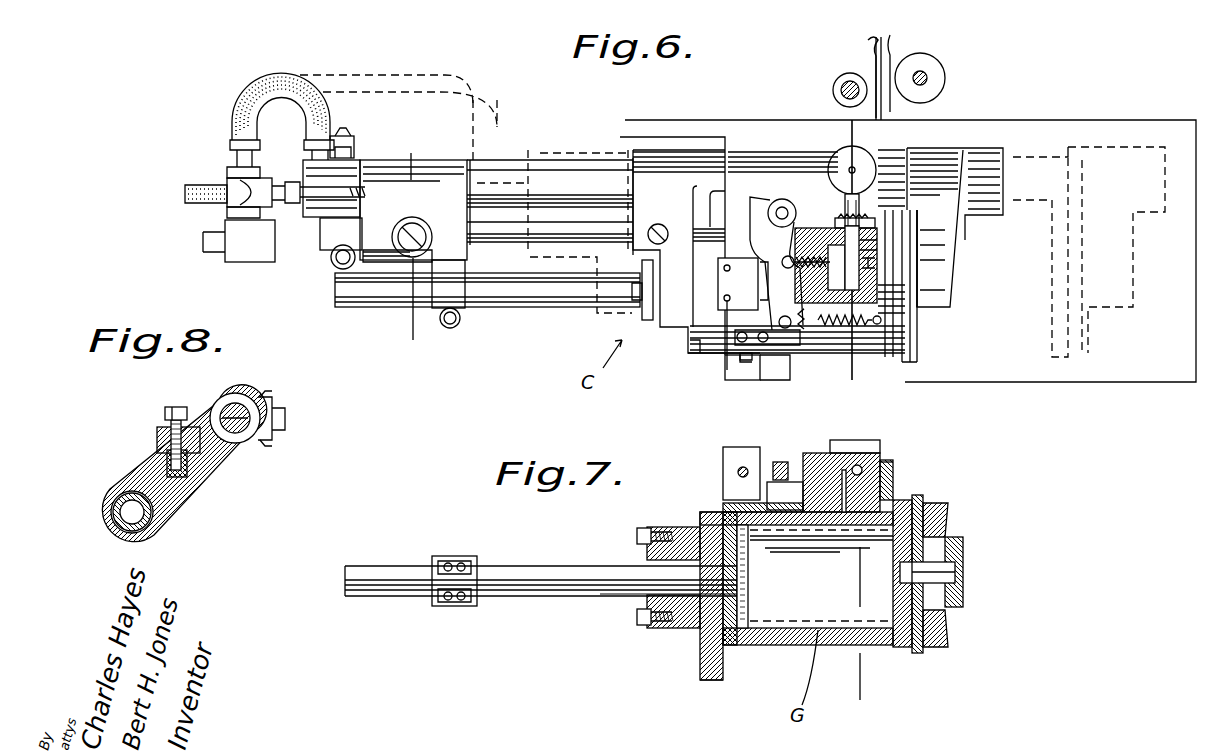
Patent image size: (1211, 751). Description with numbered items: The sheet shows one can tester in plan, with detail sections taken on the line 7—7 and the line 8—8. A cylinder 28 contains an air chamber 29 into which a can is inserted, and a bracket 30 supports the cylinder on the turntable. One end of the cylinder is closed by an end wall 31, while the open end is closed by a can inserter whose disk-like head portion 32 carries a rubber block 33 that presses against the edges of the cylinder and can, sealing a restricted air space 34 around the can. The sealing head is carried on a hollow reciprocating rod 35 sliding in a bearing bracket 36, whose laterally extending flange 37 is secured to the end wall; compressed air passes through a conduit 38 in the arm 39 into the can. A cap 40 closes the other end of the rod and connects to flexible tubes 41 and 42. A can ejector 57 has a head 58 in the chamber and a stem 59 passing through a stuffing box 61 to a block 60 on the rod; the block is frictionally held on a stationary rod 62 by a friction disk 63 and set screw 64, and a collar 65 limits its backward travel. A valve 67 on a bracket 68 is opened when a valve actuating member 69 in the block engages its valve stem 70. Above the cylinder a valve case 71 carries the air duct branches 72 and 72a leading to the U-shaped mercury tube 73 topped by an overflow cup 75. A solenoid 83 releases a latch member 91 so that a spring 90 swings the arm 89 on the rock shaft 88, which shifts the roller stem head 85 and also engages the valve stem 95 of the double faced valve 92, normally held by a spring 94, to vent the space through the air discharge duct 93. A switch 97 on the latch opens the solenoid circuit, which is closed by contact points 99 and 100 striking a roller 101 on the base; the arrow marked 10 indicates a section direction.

In FIG. 6, the section line 7— 7 is at (320, 297).
In FIG. 6, the section line 8— 8 is at (388, 150).
In FIG. 7, the section line 10- 10 is at (845, 443).
In FIG. 6, the cylinder 28 is at (920, 332).
In FIG. 7, the cylinder 28 is at (822, 645).
In FIG. 7, the air chamber 29 is at (800, 638).
In FIG. 6, the bracket 30 is at (703, 362).
In FIG. 7, the bracket 30 is at (718, 680).
In FIG. 7, the end wall 31 is at (725, 652).
In FIG. 6, the disk-like head portion 32 is at (920, 358).
In FIG. 7, the disk-like head portion 32 is at (925, 652).
In FIG. 6, the rubber block 33 is at (895, 357).
In FIG. 7, the rubber block 33 is at (903, 652).
In FIG. 7, the restricted air space 34 is at (860, 650).
In FIG. 6, the reciprocating rod 35 is at (1030, 158).
In FIG. 6, the bearing bracket 36 is at (890, 160).
In FIG. 7, the laterally extending flange 37 is at (700, 630).
In FIG. 7, the conduit 38 is at (935, 563).
In FIG. 6, the arm 39 is at (875, 276).
In FIG. 7, the arm 39 is at (965, 595).
In FIG. 6, the cap 40 is at (330, 168).
In FIG. 6, the flexible tube 41 is at (270, 72).
In FIG. 6, the flexible tube 42 is at (200, 208).
In FIG. 7, the can ejector 57 is at (611, 603).
In FIG. 7, the head 58 is at (750, 582).
In FIG. 6, the stem 59 is at (556, 306).
In FIG. 7, the stem 59 is at (534, 566).
In FIG. 8, the stem 59 is at (238, 432).
In FIG. 6, the block 60 is at (438, 288).
In FIG. 7, the block 60 is at (446, 556).
In FIG. 8, the block 60 is at (176, 505).
In FIG. 7, the stuffing box 61 is at (655, 628).
In FIG. 6, the stationary rod 62 is at (518, 242).
In FIG. 8, the stationary rod 62 is at (157, 462).
In FIG. 8, the friction disk 63 is at (168, 447).
In FIG. 6, the set screw 64 is at (433, 237).
In FIG. 8, the set screw 64 is at (175, 407).
In FIG. 6, the collar 65 is at (340, 268).
In FIG. 6, the valve 67 is at (233, 185).
In FIG. 6, the bracket 68 is at (250, 256).
In FIG. 6, the valve actuating member 69 is at (328, 193).
In FIG. 6, the valve stem 70 is at (277, 176).
In FIG. 6, the valve case 71 is at (877, 272).
In FIG. 7, the valve case 71 is at (882, 476).
In FIG. 6, the compressed air duct branch 72 is at (852, 310).
In FIG. 7, the compressed air duct branch 72 is at (882, 486).
In FIG. 6, the compressed air duct branch 72a is at (877, 258).
In FIG. 7, the compressed air duct branch 72a is at (882, 466).
In FIG. 6, the mercury tube 73 is at (845, 202).
In FIG. 6, the overflow cup 75 is at (858, 160).
In FIG. 6, the solenoid 83 is at (733, 282).
In FIG. 7, the solenoid 83 is at (722, 476).
In FIG. 6, the head 85 is at (553, 178).
In FIG. 8, the head 85 is at (105, 512).
In FIG. 6, the rock shaft 88 is at (832, 92).
In FIG. 6, the arm 89 is at (727, 265).
In FIG. 7, the arm 89 is at (783, 462).
In FIG. 6, the spring 90 is at (830, 322).
In FIG. 6, the latch member 91 is at (787, 358).
In FIG. 6, the double faced valve 92 is at (928, 306).
In FIG. 6, the air discharge duct 93 is at (772, 285).
In FIG. 7, the air discharge duct 93 is at (812, 455).
In FIG. 6, the spring 94 is at (830, 250).
In FIG. 6, the valve stem 95 is at (775, 225).
In FIG. 7, the valve stem 95 is at (763, 497).
In FIG. 6, the switch 97 is at (750, 360).
In FIG. 6, the contact point 99 is at (868, 40).
In FIG. 6, the contact point 100 is at (890, 42).
In FIG. 6, the roller 101 is at (948, 80).